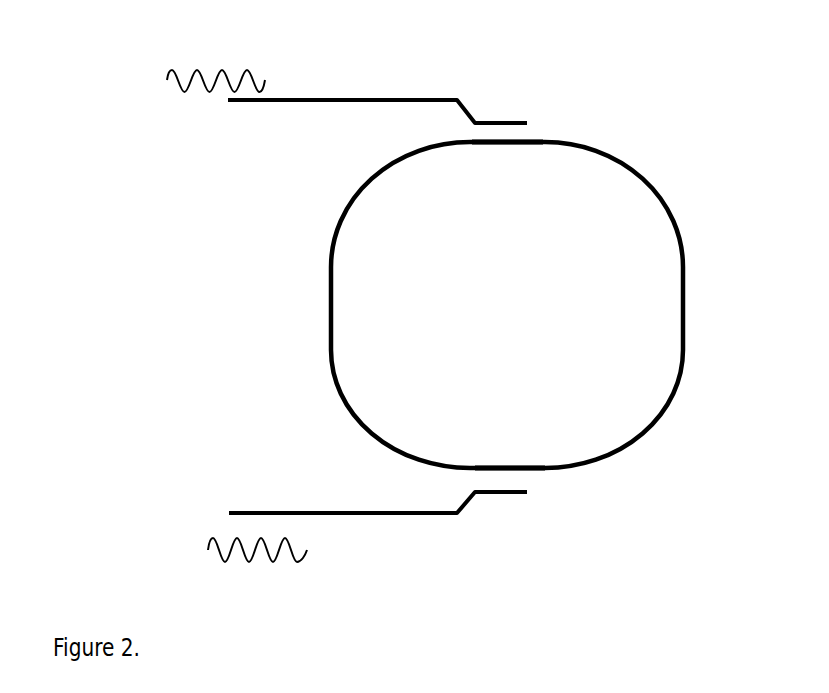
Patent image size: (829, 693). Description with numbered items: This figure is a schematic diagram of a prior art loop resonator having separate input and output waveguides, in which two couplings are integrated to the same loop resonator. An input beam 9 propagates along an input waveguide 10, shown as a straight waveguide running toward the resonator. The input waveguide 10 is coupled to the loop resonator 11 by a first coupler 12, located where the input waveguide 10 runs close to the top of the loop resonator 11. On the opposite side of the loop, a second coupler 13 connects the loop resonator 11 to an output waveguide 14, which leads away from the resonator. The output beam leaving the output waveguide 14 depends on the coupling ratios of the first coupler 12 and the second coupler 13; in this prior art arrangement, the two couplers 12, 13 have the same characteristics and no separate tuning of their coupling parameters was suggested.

The input beam 9 is at (207, 73).
The input waveguide 10 is at (377, 90).
The loop resonator 11 is at (490, 305).
The first coupler 12 is at (522, 132).
The second coupler 13 is at (528, 480).
The output waveguide 14 is at (367, 519).